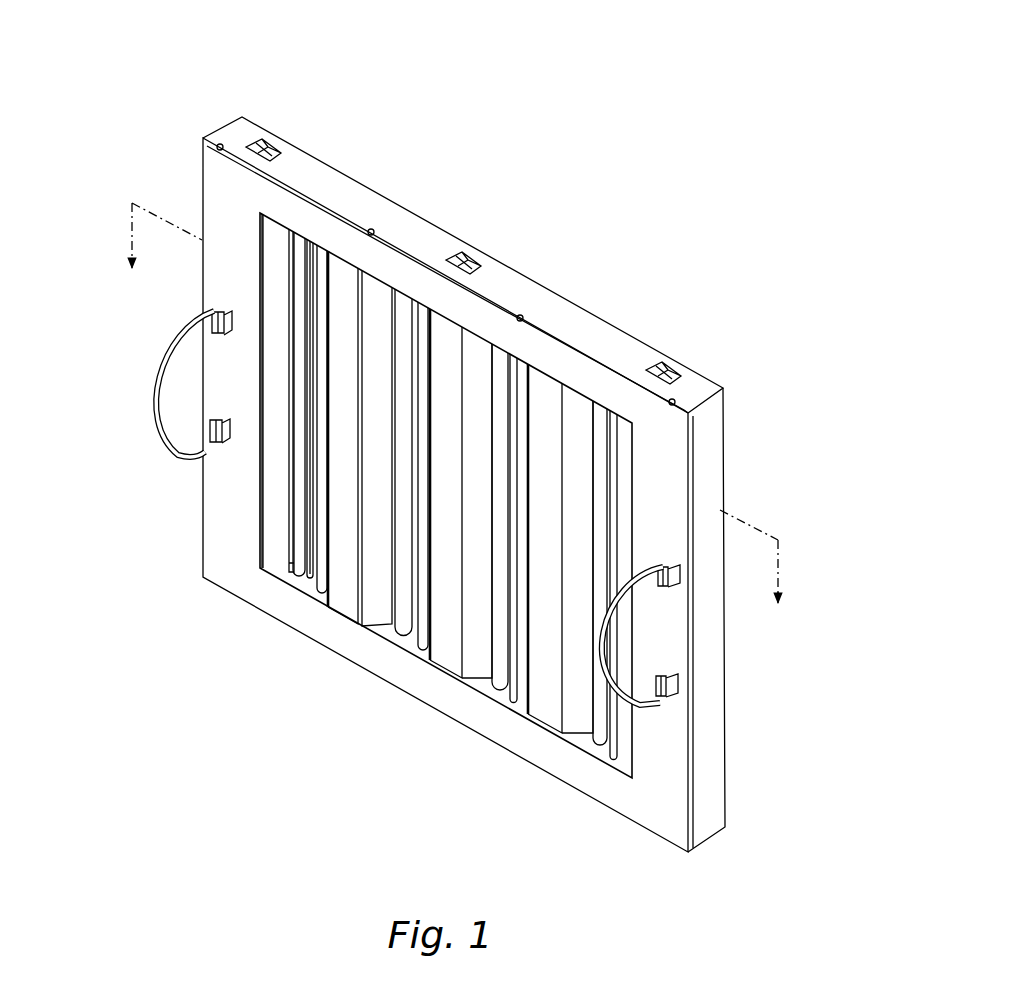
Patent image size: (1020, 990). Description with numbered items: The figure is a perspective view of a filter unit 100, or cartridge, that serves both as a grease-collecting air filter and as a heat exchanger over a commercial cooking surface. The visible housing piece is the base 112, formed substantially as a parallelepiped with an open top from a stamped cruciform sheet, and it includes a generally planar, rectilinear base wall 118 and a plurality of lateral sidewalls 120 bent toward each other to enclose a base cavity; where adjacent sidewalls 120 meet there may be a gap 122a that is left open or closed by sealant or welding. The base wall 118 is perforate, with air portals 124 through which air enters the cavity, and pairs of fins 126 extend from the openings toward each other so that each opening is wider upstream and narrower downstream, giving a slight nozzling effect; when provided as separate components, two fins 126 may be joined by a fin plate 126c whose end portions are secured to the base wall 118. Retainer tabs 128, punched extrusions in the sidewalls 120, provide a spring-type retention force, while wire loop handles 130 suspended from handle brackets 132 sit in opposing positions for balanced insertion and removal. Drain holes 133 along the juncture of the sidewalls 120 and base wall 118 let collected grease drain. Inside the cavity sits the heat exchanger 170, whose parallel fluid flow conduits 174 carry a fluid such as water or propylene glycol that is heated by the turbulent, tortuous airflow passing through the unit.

The filter unit 100 is at (476, 101).
The base 112 is at (225, 202).
The base wall 118 is at (215, 495).
The lateral sidewalls 120 is at (592, 328).
The gap 122a is at (728, 390).
The air portals 124 is at (282, 571).
The fins 126 is at (270, 290).
The fin plate 126c is at (540, 474).
The retainer tabs 128 is at (270, 138).
The handles 130 is at (180, 458).
The handle brackets 132 is at (208, 421).
The drain holes 133 is at (220, 143).
The heat exchanger 170 is at (302, 247).
The fluid flow conduits 174 is at (500, 358).